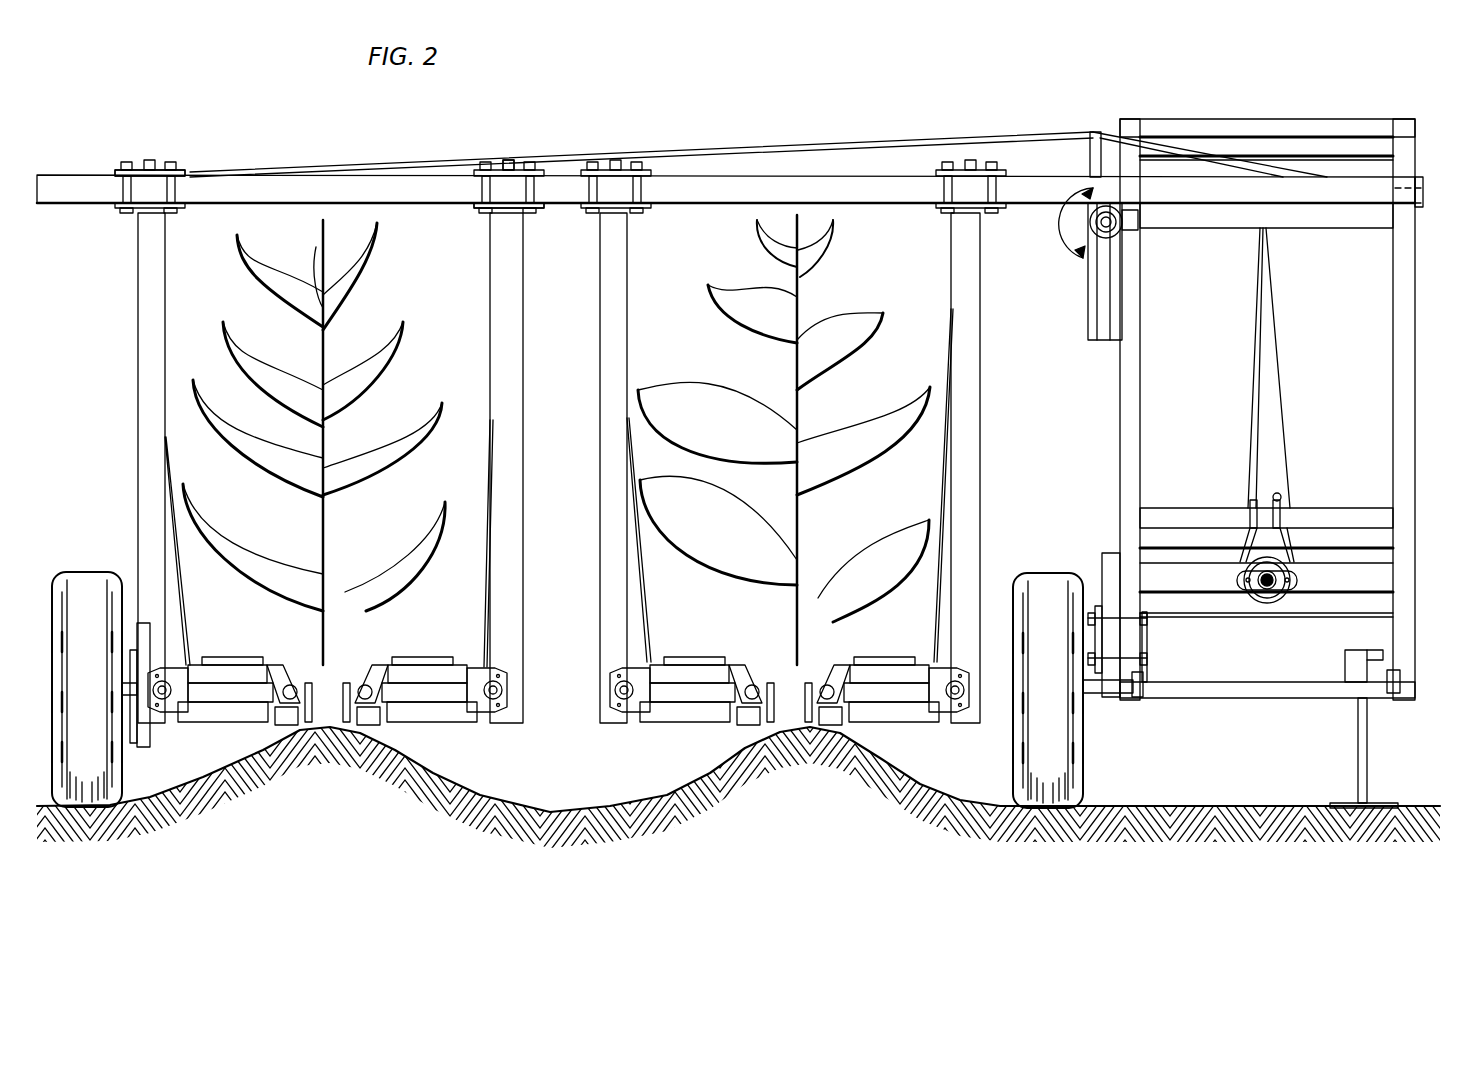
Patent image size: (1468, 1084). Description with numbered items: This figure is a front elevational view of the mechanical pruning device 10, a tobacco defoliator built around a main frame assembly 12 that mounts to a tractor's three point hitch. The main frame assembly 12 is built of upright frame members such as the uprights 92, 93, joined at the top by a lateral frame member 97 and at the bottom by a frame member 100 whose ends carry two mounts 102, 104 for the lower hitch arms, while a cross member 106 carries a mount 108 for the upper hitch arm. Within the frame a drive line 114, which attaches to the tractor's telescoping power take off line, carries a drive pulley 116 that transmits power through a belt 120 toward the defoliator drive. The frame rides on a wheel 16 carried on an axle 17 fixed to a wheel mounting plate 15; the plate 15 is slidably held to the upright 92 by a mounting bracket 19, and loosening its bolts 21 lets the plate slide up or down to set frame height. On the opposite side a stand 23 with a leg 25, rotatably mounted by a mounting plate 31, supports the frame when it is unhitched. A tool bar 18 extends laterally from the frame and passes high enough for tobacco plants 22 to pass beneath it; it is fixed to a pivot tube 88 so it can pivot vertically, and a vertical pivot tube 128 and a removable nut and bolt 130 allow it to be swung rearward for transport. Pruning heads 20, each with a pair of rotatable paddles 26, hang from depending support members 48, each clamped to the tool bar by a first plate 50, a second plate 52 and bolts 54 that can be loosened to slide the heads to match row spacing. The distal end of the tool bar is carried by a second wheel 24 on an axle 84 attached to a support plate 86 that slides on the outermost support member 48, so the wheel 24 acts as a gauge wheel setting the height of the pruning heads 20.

The mechanical pruning device 10 is at (806, 128).
The main frame assembly 12 is at (1320, 116).
The wheel mounting plate 15 is at (1112, 700).
The wheel 16 is at (1040, 583).
The axle 17 is at (1094, 694).
The tool bar 18 is at (881, 192).
The mounting bracket 19 is at (1150, 642).
The pruning heads 20 is at (648, 742).
The bolts 21 is at (1118, 612).
The tobacco plants 22 is at (388, 303).
The stand 23 is at (1350, 750).
The second wheel 24 is at (80, 575).
The leg 25 is at (1358, 786).
The rotatable paddles 26 is at (352, 684).
The mounting plate 31 is at (1350, 655).
The depending support members 48 is at (155, 298).
The first plate 50 is at (540, 208).
The second plate 52 is at (513, 172).
The bolts 54 is at (480, 185).
The axle 84 is at (125, 689).
The support plate 86 is at (150, 632).
The pivot tube 88 is at (1085, 228).
The upright frame member 92 is at (1132, 362).
The upright frame member 93 is at (1405, 312).
The lateral frame member 97 is at (1222, 125).
The frame member 100 is at (1257, 700).
The mount 102 is at (1145, 682).
The mount 104 is at (1388, 693).
The cross member 106 is at (1325, 520).
The mount 108 is at (1277, 493).
The drive line 114 is at (1290, 584).
The drive pulley 116 is at (1265, 557).
The belt 120 is at (1272, 368).
The vertical pivot tube 128 is at (1080, 307).
The nut and bolt 130 is at (1122, 232).